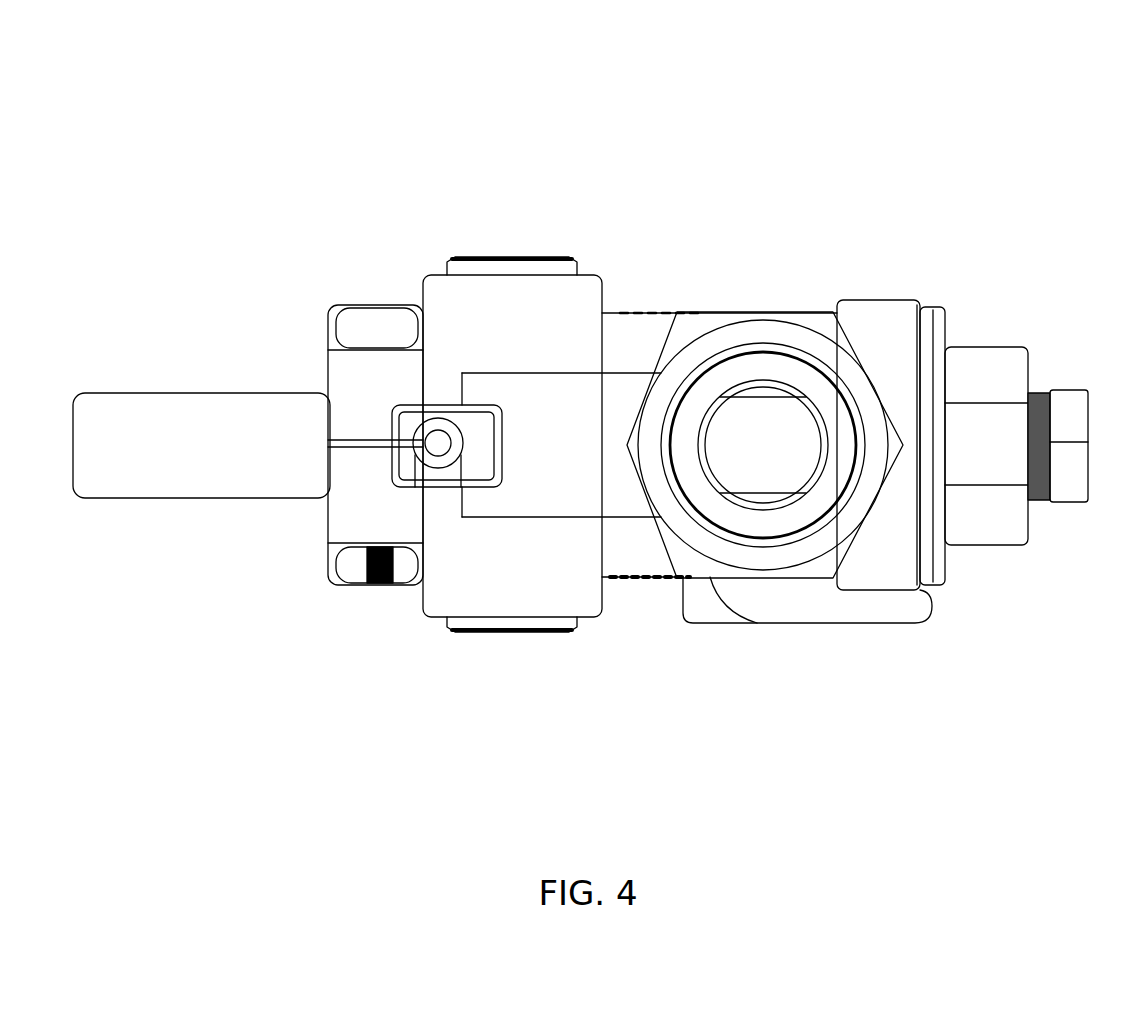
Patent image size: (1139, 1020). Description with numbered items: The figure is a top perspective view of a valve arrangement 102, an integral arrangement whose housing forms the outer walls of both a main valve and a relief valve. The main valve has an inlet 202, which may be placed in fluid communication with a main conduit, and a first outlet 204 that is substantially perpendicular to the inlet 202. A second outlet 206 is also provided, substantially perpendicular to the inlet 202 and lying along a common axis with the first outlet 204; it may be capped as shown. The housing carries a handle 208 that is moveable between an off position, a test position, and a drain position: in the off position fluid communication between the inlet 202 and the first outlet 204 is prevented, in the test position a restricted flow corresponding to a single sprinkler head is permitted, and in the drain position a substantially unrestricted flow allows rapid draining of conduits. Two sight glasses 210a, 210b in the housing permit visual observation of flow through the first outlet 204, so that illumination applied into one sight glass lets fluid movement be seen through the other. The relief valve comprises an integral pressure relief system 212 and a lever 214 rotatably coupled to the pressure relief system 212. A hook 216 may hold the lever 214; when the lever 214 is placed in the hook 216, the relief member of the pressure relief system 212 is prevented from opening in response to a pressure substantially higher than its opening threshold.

The valve arrangement 102 is at (842, 66).
The inlet 202 is at (752, 420).
The first outlet 204 is at (308, 450).
The second outlet 206 is at (985, 347).
The handle 208 is at (208, 393).
The sight glass 210a is at (523, 632).
The sight glass 210b is at (520, 258).
The pressure relief system 212 is at (539, 449).
The lever 214 is at (437, 455).
The hook 216 is at (458, 436).